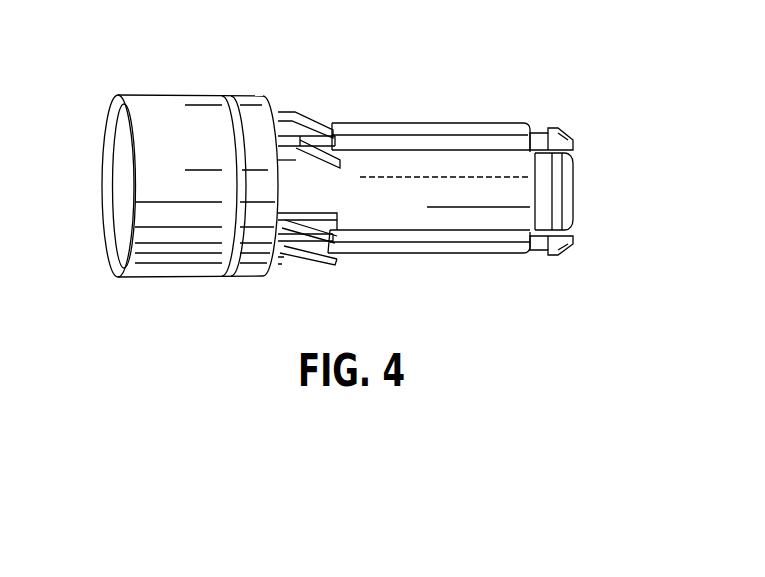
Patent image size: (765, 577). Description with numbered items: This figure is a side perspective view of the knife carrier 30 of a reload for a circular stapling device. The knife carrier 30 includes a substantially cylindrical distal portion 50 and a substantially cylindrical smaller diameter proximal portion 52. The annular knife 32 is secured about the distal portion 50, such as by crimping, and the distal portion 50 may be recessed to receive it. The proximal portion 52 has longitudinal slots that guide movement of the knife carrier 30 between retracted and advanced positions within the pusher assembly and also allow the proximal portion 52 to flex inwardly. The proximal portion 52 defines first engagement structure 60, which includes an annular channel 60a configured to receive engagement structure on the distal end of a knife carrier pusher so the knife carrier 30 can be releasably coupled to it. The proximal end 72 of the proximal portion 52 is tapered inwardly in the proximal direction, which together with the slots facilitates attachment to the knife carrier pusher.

The knife carrier 30 is at (476, 63).
The distal portion 50 is at (250, 98).
The knife 32 is at (112, 256).
The proximal portion 52 is at (433, 122).
The first engagement structure 60 is at (543, 106).
The annular channel 60a is at (542, 186).
The proximal end 72 is at (575, 212).